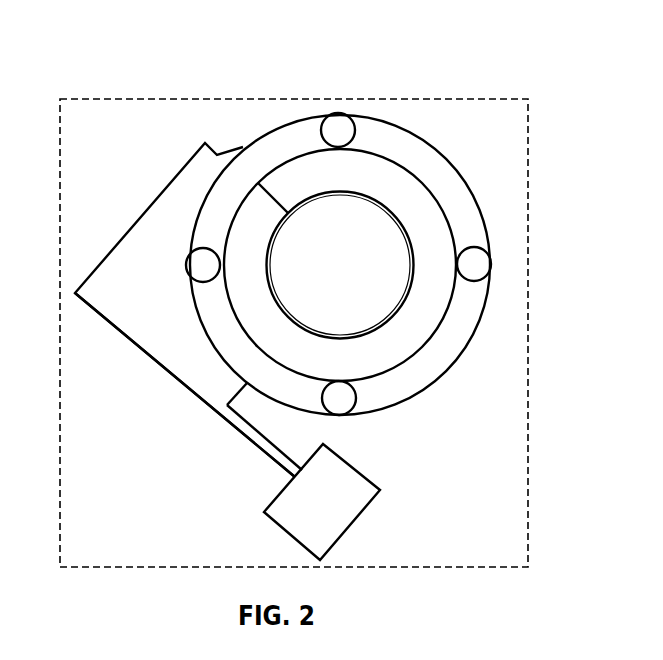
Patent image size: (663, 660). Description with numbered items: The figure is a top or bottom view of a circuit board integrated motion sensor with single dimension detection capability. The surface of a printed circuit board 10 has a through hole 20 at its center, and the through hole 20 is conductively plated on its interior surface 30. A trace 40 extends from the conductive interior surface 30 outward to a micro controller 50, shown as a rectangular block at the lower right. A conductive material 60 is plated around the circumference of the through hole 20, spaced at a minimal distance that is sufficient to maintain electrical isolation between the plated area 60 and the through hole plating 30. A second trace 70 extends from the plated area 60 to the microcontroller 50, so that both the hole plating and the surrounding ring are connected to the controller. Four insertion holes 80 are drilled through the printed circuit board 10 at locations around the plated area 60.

The printed circuit board 10 is at (478, 99).
The through hole 20 is at (352, 262).
The conductive interior surface 30 is at (318, 333).
The trace 40 is at (268, 192).
The micro controller 50 is at (368, 480).
The conductive material 60 is at (446, 159).
The second trace 70 is at (270, 442).
The insertion holes 80 is at (338, 124).